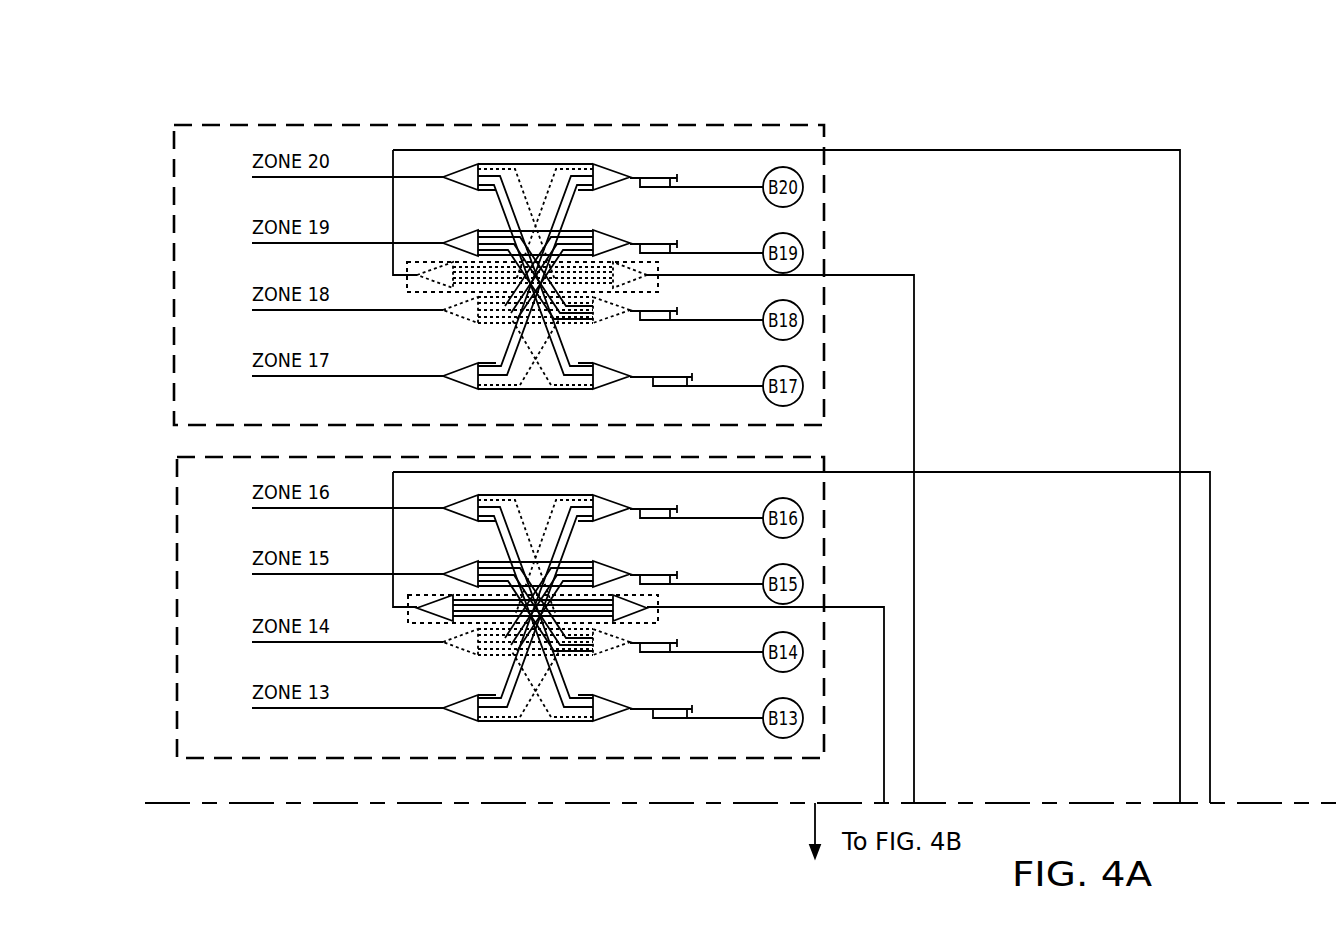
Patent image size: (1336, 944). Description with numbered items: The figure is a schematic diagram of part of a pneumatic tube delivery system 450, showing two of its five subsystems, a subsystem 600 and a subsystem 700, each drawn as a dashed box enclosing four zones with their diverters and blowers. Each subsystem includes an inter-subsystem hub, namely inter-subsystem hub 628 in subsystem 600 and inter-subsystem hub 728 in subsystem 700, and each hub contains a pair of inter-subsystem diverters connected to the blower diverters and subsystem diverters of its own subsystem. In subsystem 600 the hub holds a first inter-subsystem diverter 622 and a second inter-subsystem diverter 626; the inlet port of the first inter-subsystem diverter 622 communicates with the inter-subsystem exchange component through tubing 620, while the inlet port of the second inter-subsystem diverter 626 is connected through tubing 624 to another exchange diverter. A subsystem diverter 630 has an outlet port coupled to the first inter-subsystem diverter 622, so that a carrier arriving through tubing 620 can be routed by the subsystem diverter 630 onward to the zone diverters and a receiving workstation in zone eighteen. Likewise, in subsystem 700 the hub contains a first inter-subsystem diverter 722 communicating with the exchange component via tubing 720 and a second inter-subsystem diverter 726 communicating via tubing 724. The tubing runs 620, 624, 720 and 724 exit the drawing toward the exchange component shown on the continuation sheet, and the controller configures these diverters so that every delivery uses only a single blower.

The pneumatic tube delivery system 450 is at (1232, 97).
The subsystem 600 is at (176, 181).
The subsystem 700 is at (177, 512).
The tubing 620 is at (865, 275).
The first inter-subsystem diverter 622 is at (645, 280).
The tubing 624 is at (863, 149).
The second inter-subsystem diverter 626 is at (440, 283).
The inter-subsystem hub 628 is at (428, 262).
The subsystem diverter 630 is at (470, 306).
The tubing 720 is at (840, 606).
The first inter-subsystem diverter 722 is at (643, 615).
The tubing 724 is at (842, 471).
The second inter-subsystem diverter 726 is at (432, 614).
The inter-subsystem hub 728 is at (430, 594).